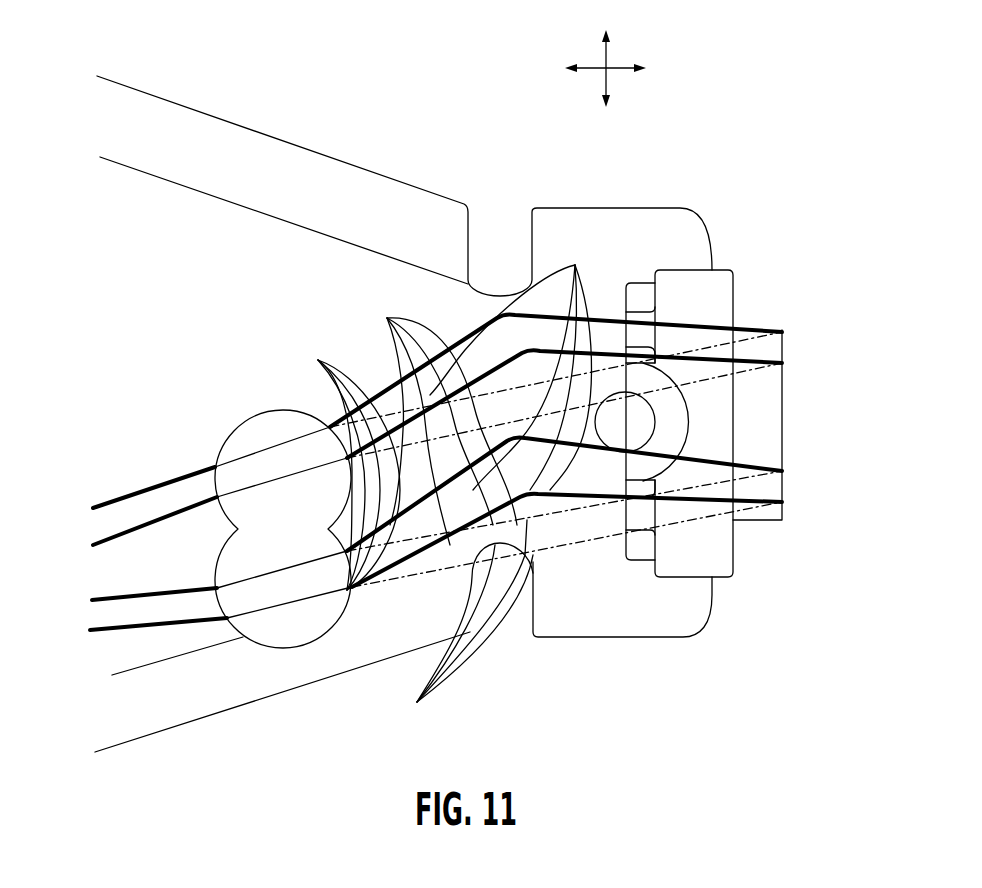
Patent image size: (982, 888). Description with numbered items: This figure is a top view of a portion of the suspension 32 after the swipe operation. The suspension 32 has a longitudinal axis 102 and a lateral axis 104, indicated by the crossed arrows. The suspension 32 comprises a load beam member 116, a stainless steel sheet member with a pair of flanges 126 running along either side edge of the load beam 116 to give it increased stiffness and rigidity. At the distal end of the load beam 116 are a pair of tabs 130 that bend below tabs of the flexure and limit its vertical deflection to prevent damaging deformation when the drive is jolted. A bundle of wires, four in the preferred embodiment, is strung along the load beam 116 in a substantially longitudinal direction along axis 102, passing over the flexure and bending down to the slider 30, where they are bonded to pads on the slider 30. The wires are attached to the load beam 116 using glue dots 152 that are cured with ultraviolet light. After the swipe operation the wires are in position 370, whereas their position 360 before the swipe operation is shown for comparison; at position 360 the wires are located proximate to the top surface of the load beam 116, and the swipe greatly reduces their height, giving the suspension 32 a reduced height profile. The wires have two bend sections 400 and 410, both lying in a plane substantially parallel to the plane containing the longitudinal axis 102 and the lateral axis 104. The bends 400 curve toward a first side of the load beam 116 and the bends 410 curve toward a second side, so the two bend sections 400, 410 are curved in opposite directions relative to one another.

The slider 30 is at (782, 412).
The suspension 32 is at (152, 312).
The longitudinal axis 102 is at (615, 65).
The lateral axis 104 is at (601, 57).
The load beam member 116 is at (303, 148).
The flanges 126 is at (223, 153).
The tabs 130 is at (618, 208).
The glue dots 152 is at (242, 427).
The position before the swipe operation 360 is at (417, 703).
The position after the swipe operation 370 is at (387, 318).
The bend section 400 is at (318, 360).
The bend section 410 is at (575, 265).